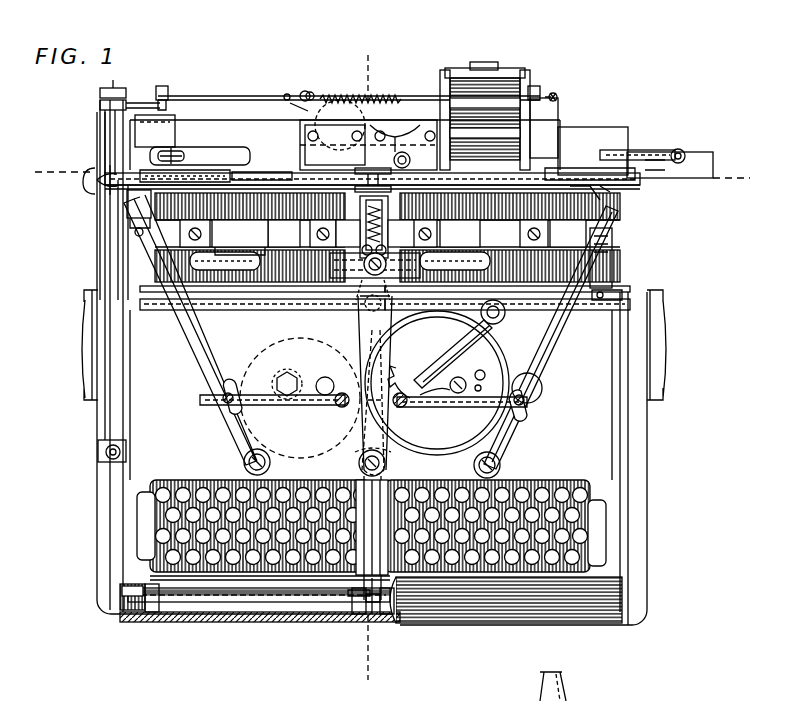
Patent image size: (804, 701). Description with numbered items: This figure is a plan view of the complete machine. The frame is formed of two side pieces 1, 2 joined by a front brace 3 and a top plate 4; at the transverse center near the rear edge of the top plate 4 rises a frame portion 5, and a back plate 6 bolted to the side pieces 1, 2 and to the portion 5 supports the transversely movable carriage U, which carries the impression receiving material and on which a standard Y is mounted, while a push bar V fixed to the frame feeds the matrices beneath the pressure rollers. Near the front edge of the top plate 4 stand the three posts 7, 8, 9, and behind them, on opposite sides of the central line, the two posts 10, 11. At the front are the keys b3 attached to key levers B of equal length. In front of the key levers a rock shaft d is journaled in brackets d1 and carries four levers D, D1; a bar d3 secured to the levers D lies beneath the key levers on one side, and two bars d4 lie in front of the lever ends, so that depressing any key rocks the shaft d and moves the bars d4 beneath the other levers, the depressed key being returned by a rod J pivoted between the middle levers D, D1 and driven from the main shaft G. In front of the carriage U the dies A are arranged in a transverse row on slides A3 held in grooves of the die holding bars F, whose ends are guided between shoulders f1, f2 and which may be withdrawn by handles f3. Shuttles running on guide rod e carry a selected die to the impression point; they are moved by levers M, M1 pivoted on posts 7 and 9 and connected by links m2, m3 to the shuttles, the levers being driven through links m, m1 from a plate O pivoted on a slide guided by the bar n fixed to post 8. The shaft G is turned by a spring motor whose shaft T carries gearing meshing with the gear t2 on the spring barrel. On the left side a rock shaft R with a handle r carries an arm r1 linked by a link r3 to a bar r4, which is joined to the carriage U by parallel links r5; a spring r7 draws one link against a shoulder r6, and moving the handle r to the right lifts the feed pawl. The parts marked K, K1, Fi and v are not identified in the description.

The side piece 1 is at (122, 494).
The side piece 2 is at (622, 480).
The front brace 3 is at (474, 624).
The top plate 4 is at (371, 395).
The frame portion 5 is at (390, 179).
The back plate 6 is at (635, 152).
The post 7 is at (243, 462).
The post 8 is at (359, 467).
The post 9 is at (500, 466).
The post 10 is at (300, 398).
The post 11 is at (541, 381).
The operating handle r is at (121, 452).
The arm r1 is at (140, 103).
The link r3 is at (207, 98).
The bar r4 is at (439, 100).
The parallel links r5 is at (328, 94).
The shoulder r6 is at (294, 105).
The contractile coil spring r7 is at (360, 85).
The carriage U is at (501, 111).
The block v is at (345, 142).
The push bar V is at (200, 158).
The link m2 is at (173, 176).
The link m3 is at (587, 182).
The standard Y is at (368, 135).
The guide rod e is at (282, 176).
The dies A is at (472, 210).
The slide A3 is at (387, 266).
The vertical shoulder f1 is at (141, 230).
The vertical shoulder f2 is at (605, 262).
The handle f3 is at (252, 255).
The die holding bar F is at (387, 227).
The guide plate Fi is at (362, 220).
The rock shaft R is at (101, 238).
The left rail K is at (216, 310).
The right rail K1 is at (510, 310).
The main shaft G is at (368, 308).
The plate O is at (433, 383).
The guide bar n is at (373, 443).
The shaft T is at (324, 377).
The lever M is at (200, 354).
The lever M1 is at (560, 332).
The link m is at (276, 404).
The link m1 is at (448, 404).
The gear t2 is at (452, 424).
The rod J is at (384, 464).
The keys b3 is at (303, 490).
The key levers B is at (581, 518).
The bar d3 is at (371, 527).
The bars d4 is at (312, 578).
The rock shaft d is at (248, 596).
The bracket d1 is at (132, 612).
The lever D is at (153, 614).
The lever D1 is at (387, 614).